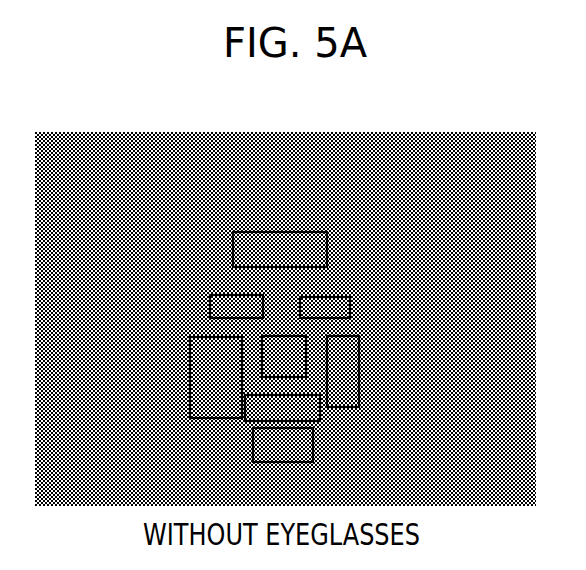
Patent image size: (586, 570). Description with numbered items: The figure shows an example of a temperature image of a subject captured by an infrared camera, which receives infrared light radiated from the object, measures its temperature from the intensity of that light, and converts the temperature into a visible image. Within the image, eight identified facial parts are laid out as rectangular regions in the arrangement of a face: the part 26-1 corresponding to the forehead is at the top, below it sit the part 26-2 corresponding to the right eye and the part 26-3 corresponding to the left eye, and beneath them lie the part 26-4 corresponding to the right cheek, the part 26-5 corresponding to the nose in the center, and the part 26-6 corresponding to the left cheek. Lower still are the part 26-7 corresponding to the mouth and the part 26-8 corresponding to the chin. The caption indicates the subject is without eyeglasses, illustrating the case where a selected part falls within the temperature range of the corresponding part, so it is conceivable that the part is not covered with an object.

The part corresponding to the forehead 26-1 is at (278, 232).
The part corresponding to the right eye 26-2 is at (210, 305).
The part corresponding to the left eye 26-3 is at (350, 306).
The part corresponding to the right cheek 26-4 is at (190, 385).
The part corresponding to the nose 26-5 is at (262, 339).
The part corresponding to the left cheek 26-6 is at (359, 368).
The part corresponding to the mouth 26-7 is at (250, 421).
The part corresponding to the chin 26-8 is at (313, 445).